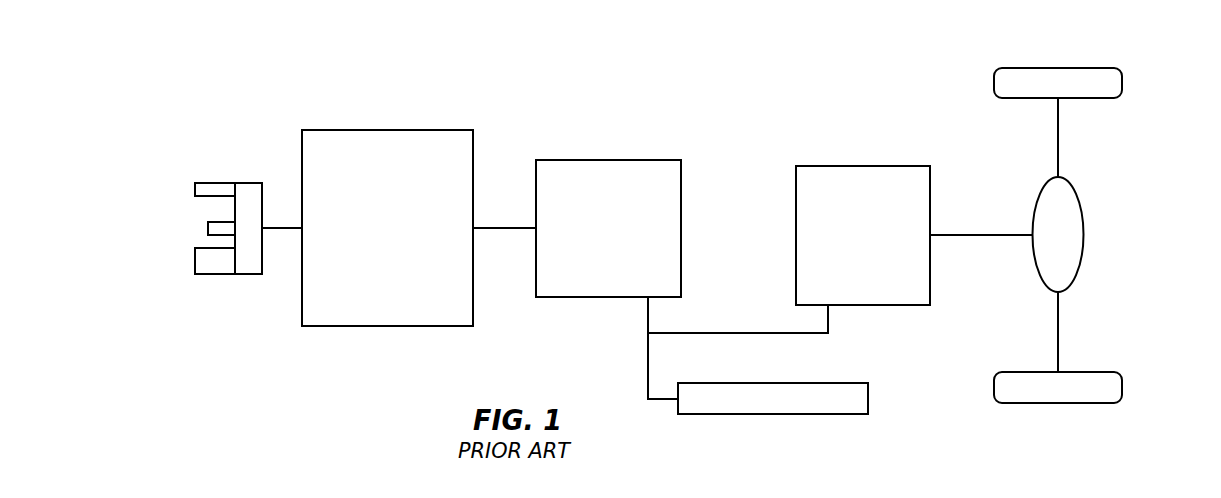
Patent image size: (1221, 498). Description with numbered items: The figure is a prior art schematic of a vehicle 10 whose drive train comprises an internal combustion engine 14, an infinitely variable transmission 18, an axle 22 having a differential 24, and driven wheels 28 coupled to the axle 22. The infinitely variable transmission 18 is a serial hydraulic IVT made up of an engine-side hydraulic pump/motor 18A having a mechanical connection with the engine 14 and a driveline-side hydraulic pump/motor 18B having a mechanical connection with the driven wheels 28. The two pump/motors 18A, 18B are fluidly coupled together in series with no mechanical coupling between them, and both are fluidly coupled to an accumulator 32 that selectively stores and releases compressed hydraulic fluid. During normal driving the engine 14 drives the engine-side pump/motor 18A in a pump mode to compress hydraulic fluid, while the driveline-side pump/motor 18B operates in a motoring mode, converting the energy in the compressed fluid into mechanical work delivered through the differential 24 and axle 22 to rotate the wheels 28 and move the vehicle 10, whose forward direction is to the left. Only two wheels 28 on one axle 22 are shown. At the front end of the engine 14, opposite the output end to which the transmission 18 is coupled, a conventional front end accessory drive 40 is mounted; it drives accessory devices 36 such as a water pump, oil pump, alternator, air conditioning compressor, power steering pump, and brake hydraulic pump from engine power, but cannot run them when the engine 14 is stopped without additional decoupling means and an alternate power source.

The vehicle 10 is at (260, 77).
The internal combustion engine 14 is at (388, 142).
The infinitely variable transmission 18 is at (701, 233).
The engine-side hydraulic pump/motor 18A is at (643, 170).
The driveline-side hydraulic pump/motor 18B is at (836, 178).
The axle 22 is at (1058, 135).
The differential 24 is at (1070, 215).
The driven wheel 28 is at (1115, 80).
The accumulator 32 is at (862, 400).
The accessory devices 36 is at (195, 262).
The front end accessory drive 40 is at (238, 305).